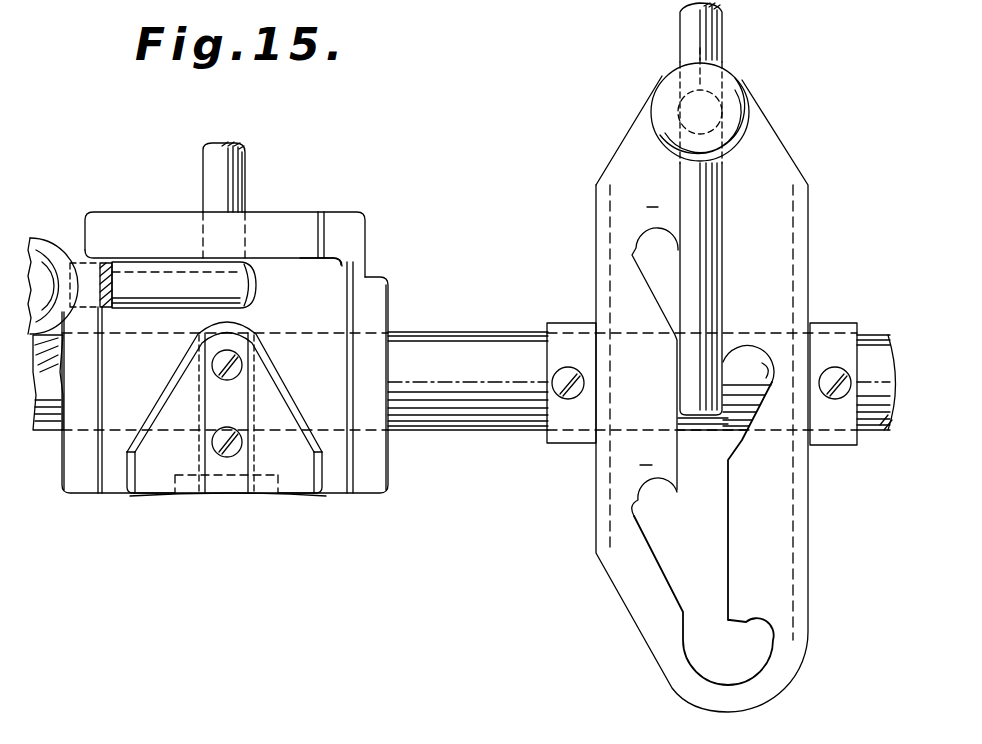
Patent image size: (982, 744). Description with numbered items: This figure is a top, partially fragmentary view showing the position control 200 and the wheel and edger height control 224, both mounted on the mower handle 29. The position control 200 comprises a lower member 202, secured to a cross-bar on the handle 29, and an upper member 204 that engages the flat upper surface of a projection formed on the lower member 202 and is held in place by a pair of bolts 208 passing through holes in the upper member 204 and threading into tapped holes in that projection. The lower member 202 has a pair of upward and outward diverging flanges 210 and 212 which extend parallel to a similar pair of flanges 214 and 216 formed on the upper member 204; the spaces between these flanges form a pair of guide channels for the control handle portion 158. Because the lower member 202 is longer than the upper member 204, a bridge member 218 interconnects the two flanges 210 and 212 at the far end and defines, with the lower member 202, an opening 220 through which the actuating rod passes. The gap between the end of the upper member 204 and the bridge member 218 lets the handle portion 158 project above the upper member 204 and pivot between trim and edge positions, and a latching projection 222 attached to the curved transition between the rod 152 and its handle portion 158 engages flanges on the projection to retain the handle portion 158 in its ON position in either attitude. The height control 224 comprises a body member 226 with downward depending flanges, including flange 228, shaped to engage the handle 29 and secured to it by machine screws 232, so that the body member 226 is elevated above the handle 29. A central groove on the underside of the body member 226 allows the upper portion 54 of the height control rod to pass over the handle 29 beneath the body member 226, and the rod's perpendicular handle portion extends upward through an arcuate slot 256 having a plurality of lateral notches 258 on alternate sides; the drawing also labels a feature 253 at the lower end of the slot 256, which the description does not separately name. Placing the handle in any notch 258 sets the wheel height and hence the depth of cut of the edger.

The mower handle 29 is at (868, 345).
The upper portion of the height control rod 54 is at (717, 38).
The rod 152 is at (240, 172).
The control handle portion 158 is at (148, 297).
The position control 200 is at (420, 272).
The lower member 202 is at (348, 498).
The upper member 204 is at (221, 485).
The bolts 208 is at (212, 432).
The flange 210 is at (110, 438).
The flange 212 is at (342, 444).
The flange 214 is at (160, 483).
The flange 216 is at (292, 483).
The bridge member 218 is at (292, 218).
The opening 220 is at (326, 262).
The latching projection 222 is at (255, 286).
The wheel and edger height control 224 is at (812, 145).
The body member 226 is at (812, 500).
The flange 228 is at (566, 323).
The machine screws 232 is at (565, 372).
The lower slot notch 253 is at (768, 633).
The arcuate slot 256 is at (697, 381).
The lateral notches 258 is at (632, 505).